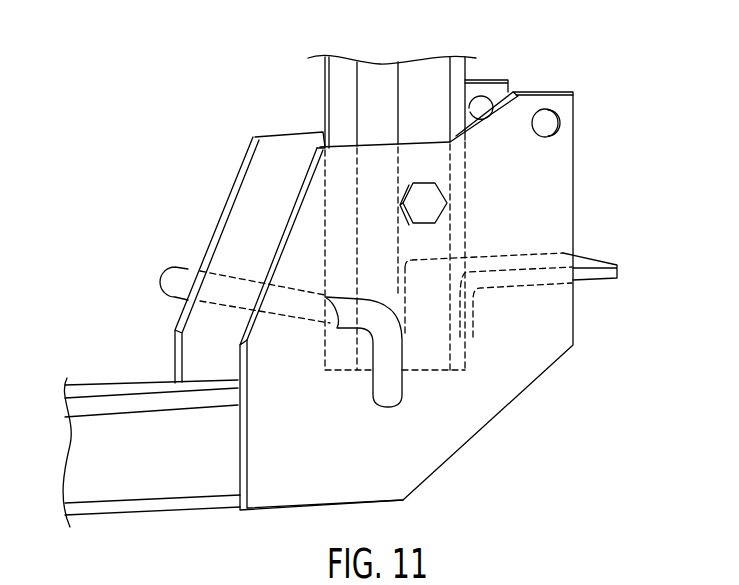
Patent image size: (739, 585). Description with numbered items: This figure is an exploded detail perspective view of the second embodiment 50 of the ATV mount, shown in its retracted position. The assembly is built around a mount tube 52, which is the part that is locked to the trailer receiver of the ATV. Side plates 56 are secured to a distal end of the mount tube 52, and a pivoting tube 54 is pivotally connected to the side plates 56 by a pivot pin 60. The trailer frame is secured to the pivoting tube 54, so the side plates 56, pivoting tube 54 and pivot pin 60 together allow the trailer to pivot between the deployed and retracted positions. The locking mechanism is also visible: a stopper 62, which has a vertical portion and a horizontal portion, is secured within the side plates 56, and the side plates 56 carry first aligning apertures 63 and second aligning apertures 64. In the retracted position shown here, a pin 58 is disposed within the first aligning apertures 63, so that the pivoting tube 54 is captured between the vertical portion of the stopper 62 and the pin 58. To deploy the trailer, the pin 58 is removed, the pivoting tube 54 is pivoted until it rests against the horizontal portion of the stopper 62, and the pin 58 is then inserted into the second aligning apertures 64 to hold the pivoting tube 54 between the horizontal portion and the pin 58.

The second embodiment 50 is at (170, 206).
The mount tube 52 is at (100, 422).
The pivoting tube 54 is at (338, 93).
The side plates 56 is at (250, 193).
The pin 58 is at (385, 397).
The pivot pin 60 is at (433, 210).
The stopper 62 is at (473, 327).
The first aligning apertures 63 is at (335, 318).
The second aligning apertures 64 is at (482, 101).